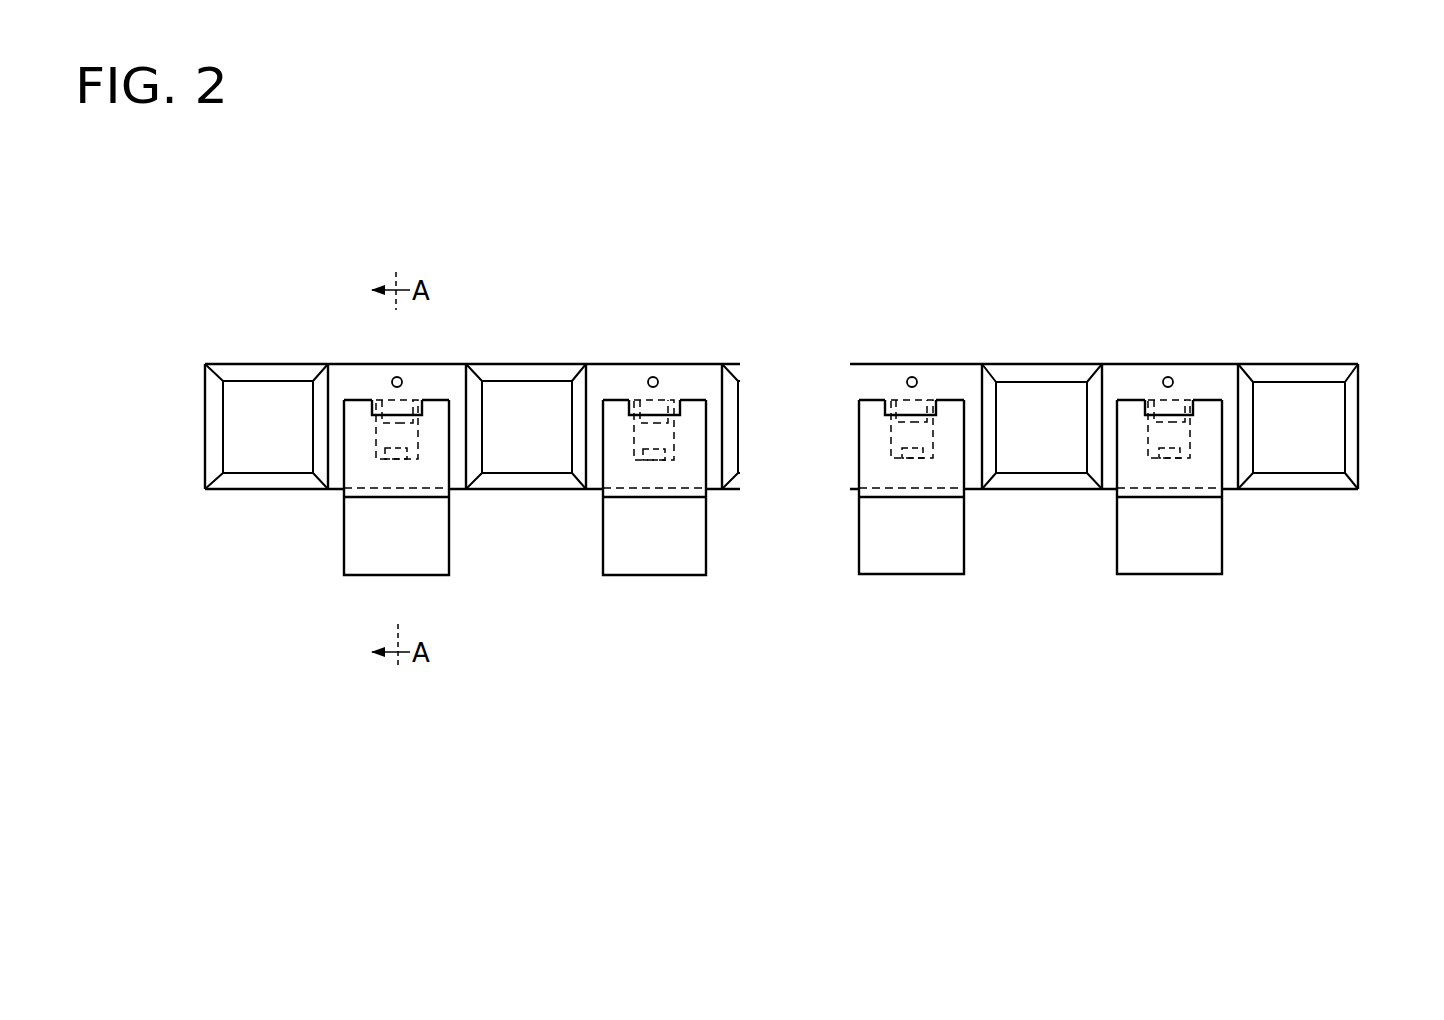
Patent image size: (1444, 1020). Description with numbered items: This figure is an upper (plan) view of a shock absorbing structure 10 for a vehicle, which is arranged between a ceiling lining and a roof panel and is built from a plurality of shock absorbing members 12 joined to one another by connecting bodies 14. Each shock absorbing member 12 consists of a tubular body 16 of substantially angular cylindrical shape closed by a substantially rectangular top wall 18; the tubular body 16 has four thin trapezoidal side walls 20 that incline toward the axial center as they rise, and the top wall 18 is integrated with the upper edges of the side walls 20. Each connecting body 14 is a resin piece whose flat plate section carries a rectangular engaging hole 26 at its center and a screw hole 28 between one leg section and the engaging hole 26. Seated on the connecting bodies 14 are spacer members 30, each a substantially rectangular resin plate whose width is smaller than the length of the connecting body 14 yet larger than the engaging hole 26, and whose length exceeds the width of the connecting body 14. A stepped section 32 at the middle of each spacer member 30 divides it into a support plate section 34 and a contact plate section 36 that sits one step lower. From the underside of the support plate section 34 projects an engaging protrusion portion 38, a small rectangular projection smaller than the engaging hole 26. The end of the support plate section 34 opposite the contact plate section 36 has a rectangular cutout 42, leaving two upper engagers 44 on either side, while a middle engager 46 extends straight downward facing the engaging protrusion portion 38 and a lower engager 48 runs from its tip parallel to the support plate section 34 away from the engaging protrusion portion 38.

The shock absorbing structure 10 is at (827, 292).
The shock absorbing member 12 is at (243, 340).
The connecting body 14 is at (592, 492).
The tubular body 16 is at (205, 430).
The top wall 18 is at (250, 440).
The side wall 20 is at (210, 402).
The engaging hole 26 is at (677, 470).
The screw hole 28 is at (392, 380).
The spacer member 30 is at (757, 470).
The stepped section 32 is at (413, 498).
The support plate section 34 is at (360, 473).
The contact plate section 36 is at (373, 553).
The engaging protrusion portion 38 is at (633, 463).
The cutout 42 is at (684, 402).
The upper engager 44 is at (612, 400).
The middle engager 46 is at (642, 410).
The lower engager 48 is at (668, 400).